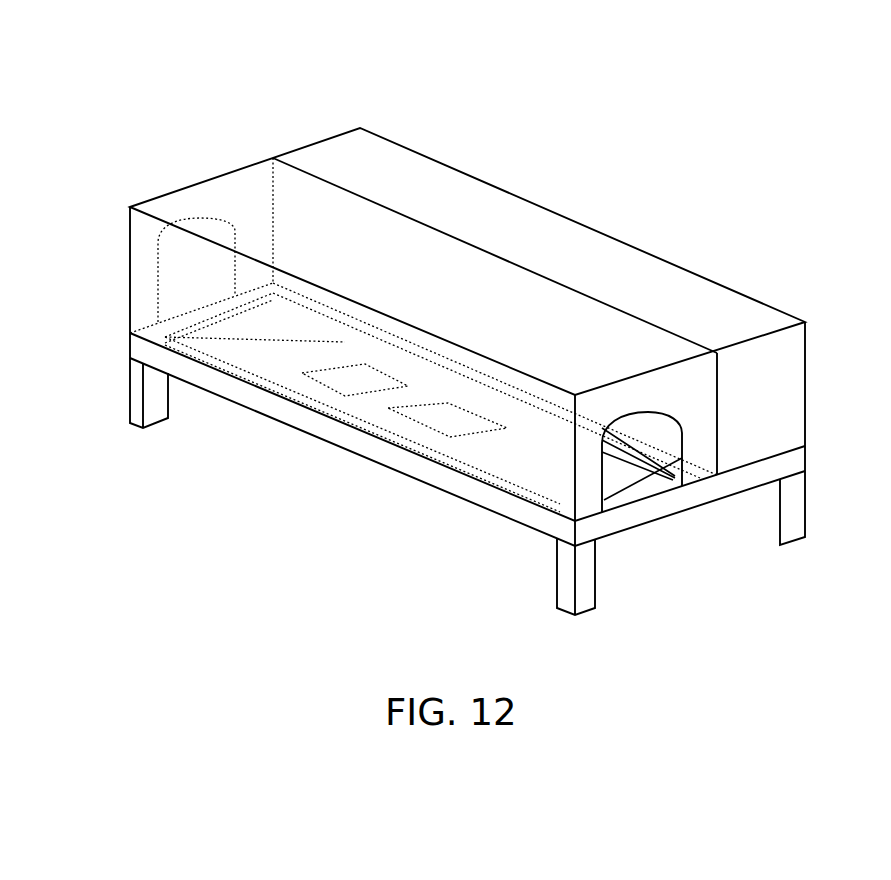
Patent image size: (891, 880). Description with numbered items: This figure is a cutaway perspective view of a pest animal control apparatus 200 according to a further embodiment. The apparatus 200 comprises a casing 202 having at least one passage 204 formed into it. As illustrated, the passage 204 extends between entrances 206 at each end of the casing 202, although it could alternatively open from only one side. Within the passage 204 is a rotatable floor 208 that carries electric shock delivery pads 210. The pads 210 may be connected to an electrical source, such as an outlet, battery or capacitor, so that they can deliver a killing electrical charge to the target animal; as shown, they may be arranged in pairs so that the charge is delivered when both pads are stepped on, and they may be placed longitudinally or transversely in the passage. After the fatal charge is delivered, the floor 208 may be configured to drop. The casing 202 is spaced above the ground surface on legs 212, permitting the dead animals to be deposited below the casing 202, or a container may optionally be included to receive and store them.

The pest animal control apparatus 200 is at (507, 83).
The casing 202 is at (663, 259).
The passage 204 is at (187, 251).
The entrances 206 is at (158, 247).
The rotatable floor 208 is at (263, 360).
The electric shock delivery pad 210 is at (387, 420).
The legs 212 is at (122, 412).